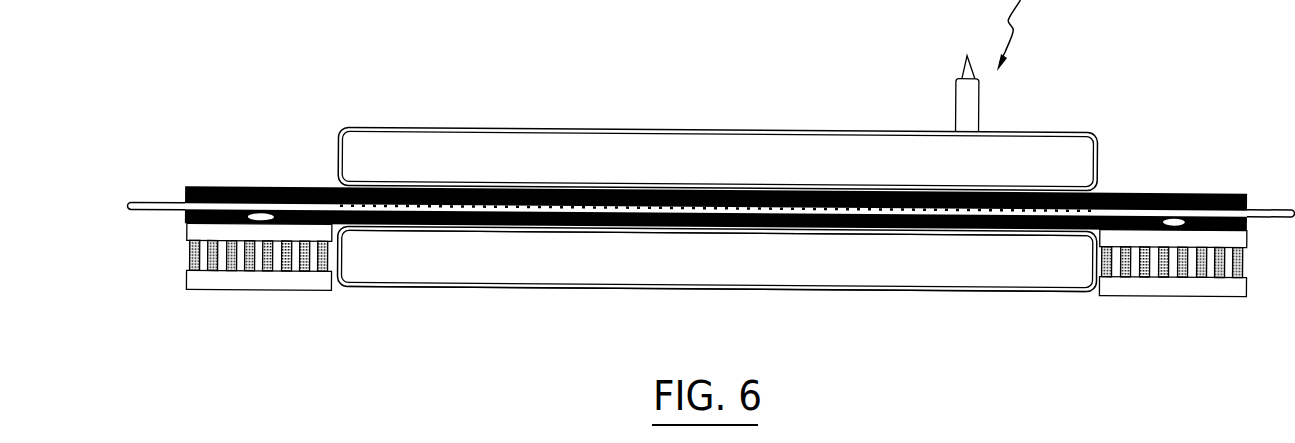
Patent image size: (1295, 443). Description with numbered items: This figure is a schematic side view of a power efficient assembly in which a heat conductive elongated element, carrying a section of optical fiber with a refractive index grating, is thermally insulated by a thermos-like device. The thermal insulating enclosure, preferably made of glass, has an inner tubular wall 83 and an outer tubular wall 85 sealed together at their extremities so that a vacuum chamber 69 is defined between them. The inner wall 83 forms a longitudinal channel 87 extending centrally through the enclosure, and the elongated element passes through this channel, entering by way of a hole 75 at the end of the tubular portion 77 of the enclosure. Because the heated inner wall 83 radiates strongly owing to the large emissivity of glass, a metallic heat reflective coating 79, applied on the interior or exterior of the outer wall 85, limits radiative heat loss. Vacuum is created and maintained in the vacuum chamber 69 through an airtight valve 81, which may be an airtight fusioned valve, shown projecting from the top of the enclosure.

The vacuum chamber 69 is at (484, 266).
The hole 75 is at (341, 188).
The tubular portion 77 is at (541, 131).
The heat reflective coating 79 is at (634, 133).
The airtight valve 81 is at (965, 108).
The inner tubular wall 83 is at (967, 231).
The outer tubular wall 85 is at (1039, 289).
The longitudinal channel 87 is at (716, 184).